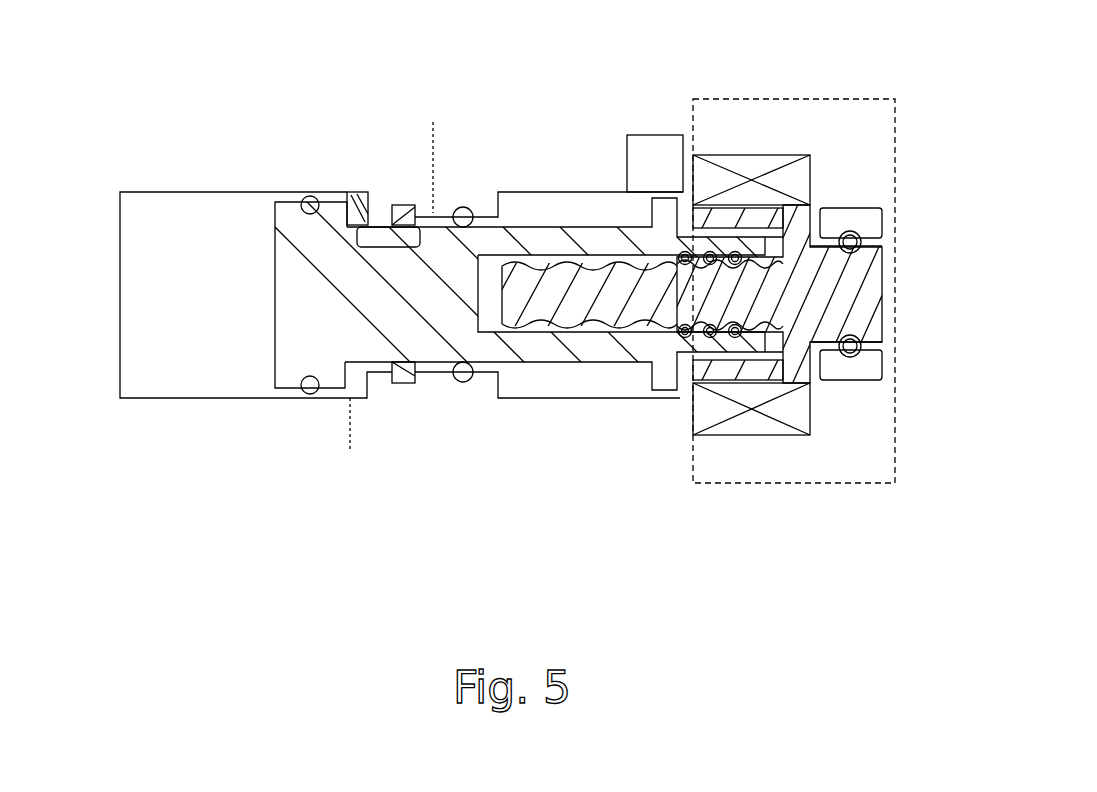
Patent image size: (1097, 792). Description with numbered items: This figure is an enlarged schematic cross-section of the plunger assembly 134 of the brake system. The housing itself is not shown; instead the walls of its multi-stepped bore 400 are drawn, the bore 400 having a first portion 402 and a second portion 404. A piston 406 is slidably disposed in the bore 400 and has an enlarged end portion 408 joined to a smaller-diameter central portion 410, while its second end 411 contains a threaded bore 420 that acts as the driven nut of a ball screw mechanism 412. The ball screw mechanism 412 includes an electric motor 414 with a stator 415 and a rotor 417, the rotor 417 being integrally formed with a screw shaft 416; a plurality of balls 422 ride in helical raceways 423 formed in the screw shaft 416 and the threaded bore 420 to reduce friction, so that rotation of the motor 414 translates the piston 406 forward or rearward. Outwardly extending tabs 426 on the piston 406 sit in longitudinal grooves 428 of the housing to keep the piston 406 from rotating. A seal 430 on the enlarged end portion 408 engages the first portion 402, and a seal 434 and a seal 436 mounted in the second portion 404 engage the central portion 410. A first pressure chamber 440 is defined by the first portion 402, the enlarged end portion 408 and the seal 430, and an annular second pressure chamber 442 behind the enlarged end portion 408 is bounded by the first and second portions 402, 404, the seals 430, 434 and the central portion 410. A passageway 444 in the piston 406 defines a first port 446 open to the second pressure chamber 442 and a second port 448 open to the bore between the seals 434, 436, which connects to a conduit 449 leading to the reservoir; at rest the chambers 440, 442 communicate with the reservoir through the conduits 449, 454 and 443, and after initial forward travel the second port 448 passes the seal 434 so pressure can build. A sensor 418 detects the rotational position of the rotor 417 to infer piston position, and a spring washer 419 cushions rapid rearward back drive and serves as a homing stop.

The plunger assembly 134 is at (266, 81).
The multi-stepped bore 400 is at (237, 378).
The first portion of the bore 402 is at (153, 191).
The second portion of the bore 404 is at (500, 385).
The piston 406 is at (478, 232).
The enlarged end portion 408 is at (360, 322).
The central portion 410 is at (537, 350).
The second end of the piston 411 is at (687, 343).
The ball screw mechanism 412 is at (893, 238).
The electric motor 414 is at (854, 96).
The stator 415 is at (754, 167).
The screw shaft 416 is at (708, 293).
The rotor 417 is at (760, 215).
The sensor 418 is at (627, 135).
The spring washer 419 is at (358, 193).
The threaded bore 420 is at (642, 332).
The balls 422 is at (653, 223).
The helical raceways 423 is at (592, 305).
The tabs 426 is at (673, 345).
The grooves 428 is at (546, 240).
The seal 430 is at (310, 200).
The seal 434 is at (404, 384).
The seal 436 is at (465, 383).
The first pressure chamber 440 is at (137, 242).
The second pressure chamber 442 is at (340, 188).
The conduit 443 is at (349, 452).
The passageway 444 is at (420, 262).
The first port 446 is at (365, 228).
The second port 448 is at (404, 208).
The conduit 449 is at (433, 137).
The first output conduit 454 is at (81, 311).